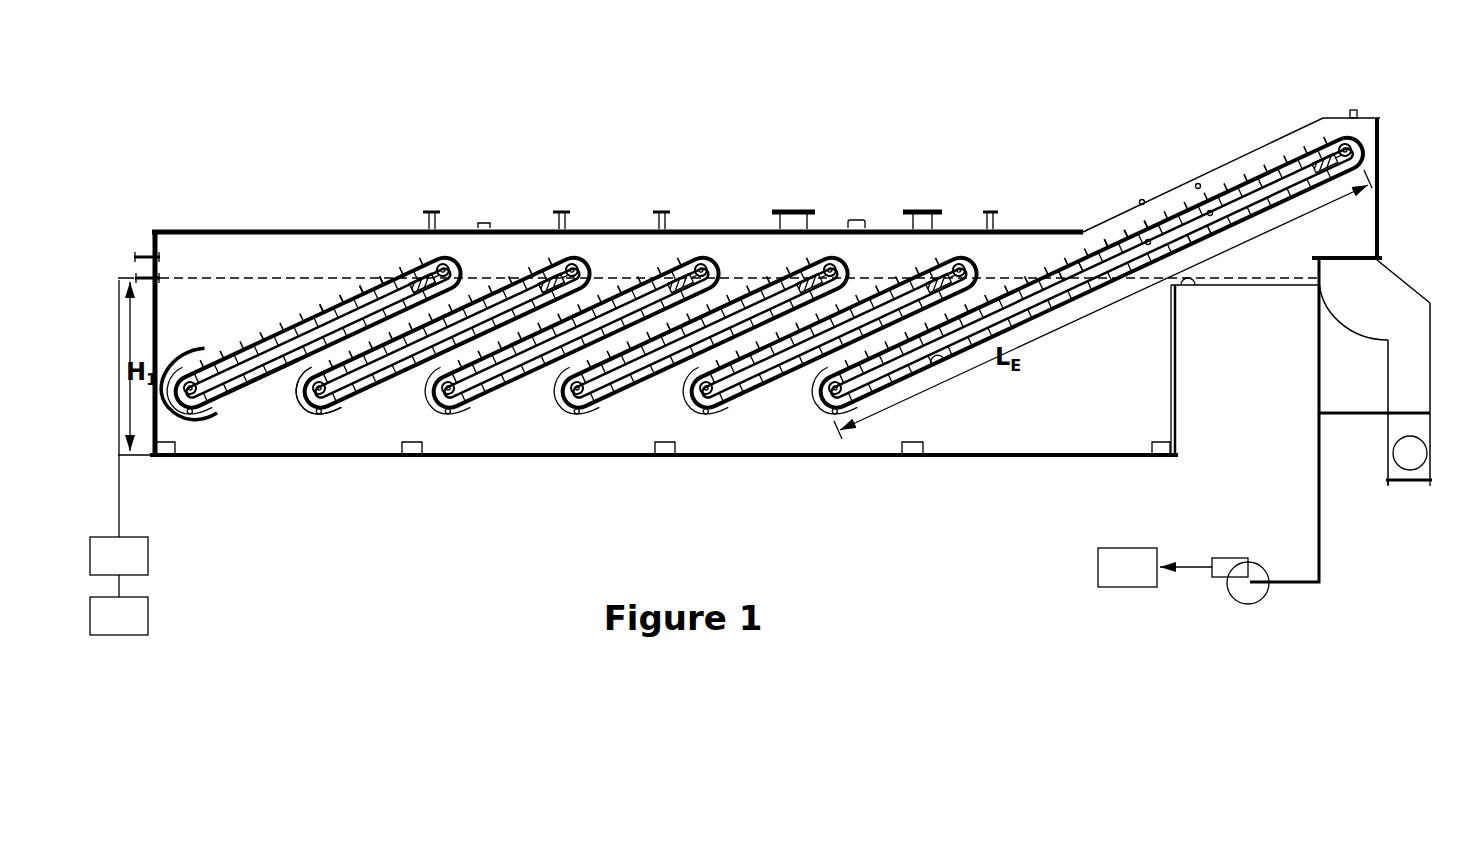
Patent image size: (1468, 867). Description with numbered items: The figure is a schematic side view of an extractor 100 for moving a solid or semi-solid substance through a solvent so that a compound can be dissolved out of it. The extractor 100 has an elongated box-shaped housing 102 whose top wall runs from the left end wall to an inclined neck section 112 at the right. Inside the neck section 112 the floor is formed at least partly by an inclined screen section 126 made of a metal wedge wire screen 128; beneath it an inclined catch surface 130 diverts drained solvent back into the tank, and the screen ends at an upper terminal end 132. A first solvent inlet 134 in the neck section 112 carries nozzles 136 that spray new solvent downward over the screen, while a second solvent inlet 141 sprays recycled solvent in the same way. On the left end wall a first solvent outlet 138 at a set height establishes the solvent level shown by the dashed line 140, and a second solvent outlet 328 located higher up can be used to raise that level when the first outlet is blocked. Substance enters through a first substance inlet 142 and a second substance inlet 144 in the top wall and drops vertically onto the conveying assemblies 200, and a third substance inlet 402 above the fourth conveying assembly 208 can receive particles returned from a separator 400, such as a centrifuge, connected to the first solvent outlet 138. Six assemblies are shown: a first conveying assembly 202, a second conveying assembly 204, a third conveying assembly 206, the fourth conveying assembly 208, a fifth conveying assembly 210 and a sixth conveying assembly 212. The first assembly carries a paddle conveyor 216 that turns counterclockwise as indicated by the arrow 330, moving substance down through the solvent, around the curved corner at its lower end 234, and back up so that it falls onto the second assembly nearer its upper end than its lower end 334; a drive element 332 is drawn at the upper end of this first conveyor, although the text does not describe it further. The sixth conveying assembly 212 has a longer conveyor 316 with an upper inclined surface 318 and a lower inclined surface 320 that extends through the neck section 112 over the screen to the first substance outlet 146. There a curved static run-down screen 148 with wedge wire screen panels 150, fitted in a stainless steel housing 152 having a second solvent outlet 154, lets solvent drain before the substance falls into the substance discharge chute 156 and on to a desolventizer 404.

The extractor 100 is at (288, 92).
The housing 102 is at (287, 228).
The inclined neck section 112 is at (1283, 132).
The inclined screen section 126 is at (1270, 240).
The metal wedge wire screen 128 is at (1193, 233).
The inclined catch surface 130 is at (1195, 285).
The upper terminal end 132 is at (1327, 143).
The first solvent inlet 134 is at (1187, 170).
The nozzles 136 is at (1202, 182).
The first solvent outlet 138 is at (134, 278).
The solvent level 140 is at (265, 281).
The second solvent inlet 141 is at (1140, 198).
The first substance inlet 142 is at (434, 211).
The second substance inlet 144 is at (562, 211).
The first substance outlet 146 is at (1383, 247).
The run-down screen 148 is at (1345, 303).
The wedge wire screen panels 150 is at (1362, 333).
The housing 152 is at (1433, 330).
The second solvent outlet 154 is at (1318, 418).
The substance discharge chute 156 is at (1415, 367).
The conveying assemblies 200 is at (397, 253).
The first conveying assembly 202 is at (410, 253).
The second conveying assembly 204 is at (548, 247).
The third conveying assembly 206 is at (695, 248).
The fourth conveying assembly 208 is at (822, 253).
The fifth conveying assembly 210 is at (927, 257).
The sixth conveying assembly 212 is at (1268, 160).
The conveyor 216 is at (353, 296).
The lower end 234 is at (248, 398).
The conveyor 316 is at (1117, 225).
The upper inclined surface 318 is at (1070, 263).
The lower inclined surface 320 is at (952, 362).
The second solvent outlet 328 is at (148, 255).
The arrow 330 is at (190, 419).
The drive motor 332 is at (464, 250).
The lower end 334 is at (576, 250).
The separator 400 is at (148, 557).
The third substance inlet 402 is at (800, 210).
The desolventizer 404 is at (148, 620).